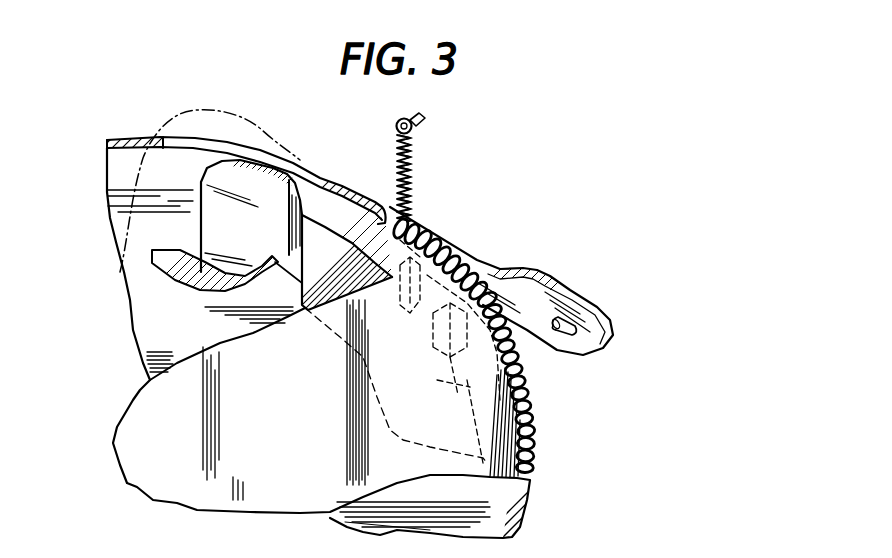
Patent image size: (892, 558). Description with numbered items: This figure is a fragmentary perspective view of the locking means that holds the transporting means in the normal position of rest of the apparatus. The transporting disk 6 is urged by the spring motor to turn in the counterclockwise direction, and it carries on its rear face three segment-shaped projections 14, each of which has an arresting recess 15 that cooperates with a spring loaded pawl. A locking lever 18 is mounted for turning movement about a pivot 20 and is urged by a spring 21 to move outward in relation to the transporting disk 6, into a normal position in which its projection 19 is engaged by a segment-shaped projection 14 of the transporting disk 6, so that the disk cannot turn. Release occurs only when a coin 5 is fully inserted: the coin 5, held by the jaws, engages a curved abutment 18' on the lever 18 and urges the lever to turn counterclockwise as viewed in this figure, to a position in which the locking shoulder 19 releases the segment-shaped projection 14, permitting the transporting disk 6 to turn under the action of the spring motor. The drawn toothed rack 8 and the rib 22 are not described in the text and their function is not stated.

The coin 5 is at (249, 140).
The transporting disk 6 is at (267, 493).
The rack teeth 8 is at (533, 423).
The segment-shaped projection 14 is at (347, 180).
The arresting recess 15 is at (447, 381).
The locking lever 18 is at (641, 227).
The curved abutment 18' is at (440, 220).
The projection 19 is at (287, 170).
The pivot 20 is at (588, 308).
The spring 21 is at (412, 175).
The rib 22 is at (460, 520).